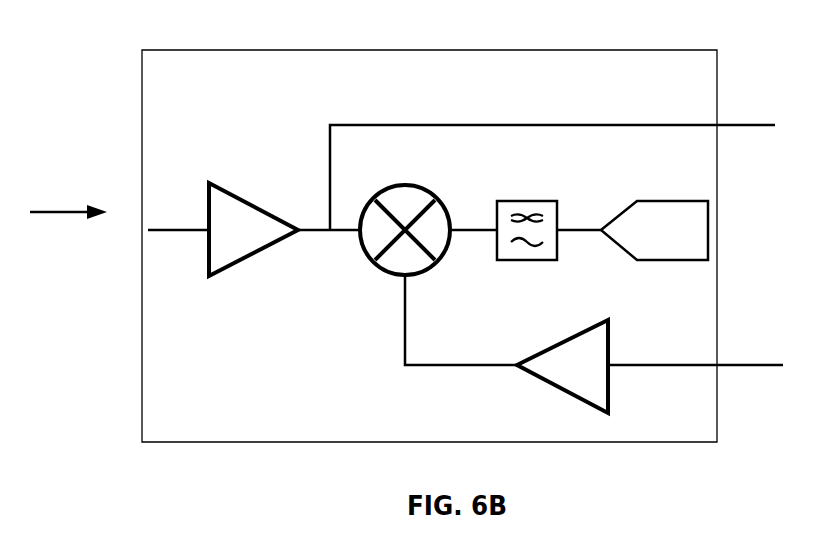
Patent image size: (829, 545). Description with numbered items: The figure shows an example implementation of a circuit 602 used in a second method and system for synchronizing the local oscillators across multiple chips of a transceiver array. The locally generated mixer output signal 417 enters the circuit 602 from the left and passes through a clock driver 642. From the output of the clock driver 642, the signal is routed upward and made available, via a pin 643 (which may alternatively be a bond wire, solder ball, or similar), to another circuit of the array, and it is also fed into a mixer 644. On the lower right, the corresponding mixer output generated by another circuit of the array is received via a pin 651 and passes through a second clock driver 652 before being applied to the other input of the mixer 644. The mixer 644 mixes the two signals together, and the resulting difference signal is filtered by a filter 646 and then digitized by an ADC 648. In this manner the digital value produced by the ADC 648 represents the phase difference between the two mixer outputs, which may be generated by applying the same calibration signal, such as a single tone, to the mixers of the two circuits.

The circuit 602 is at (291, 38).
The mixer output signal 417 is at (53, 212).
The clock driver 642 is at (259, 189).
The pin 643 is at (754, 125).
The mixer 644 is at (420, 175).
The filter 646 is at (538, 190).
The ADC 648 is at (684, 190).
The pin 651 is at (755, 366).
The clock driver 652 is at (556, 385).